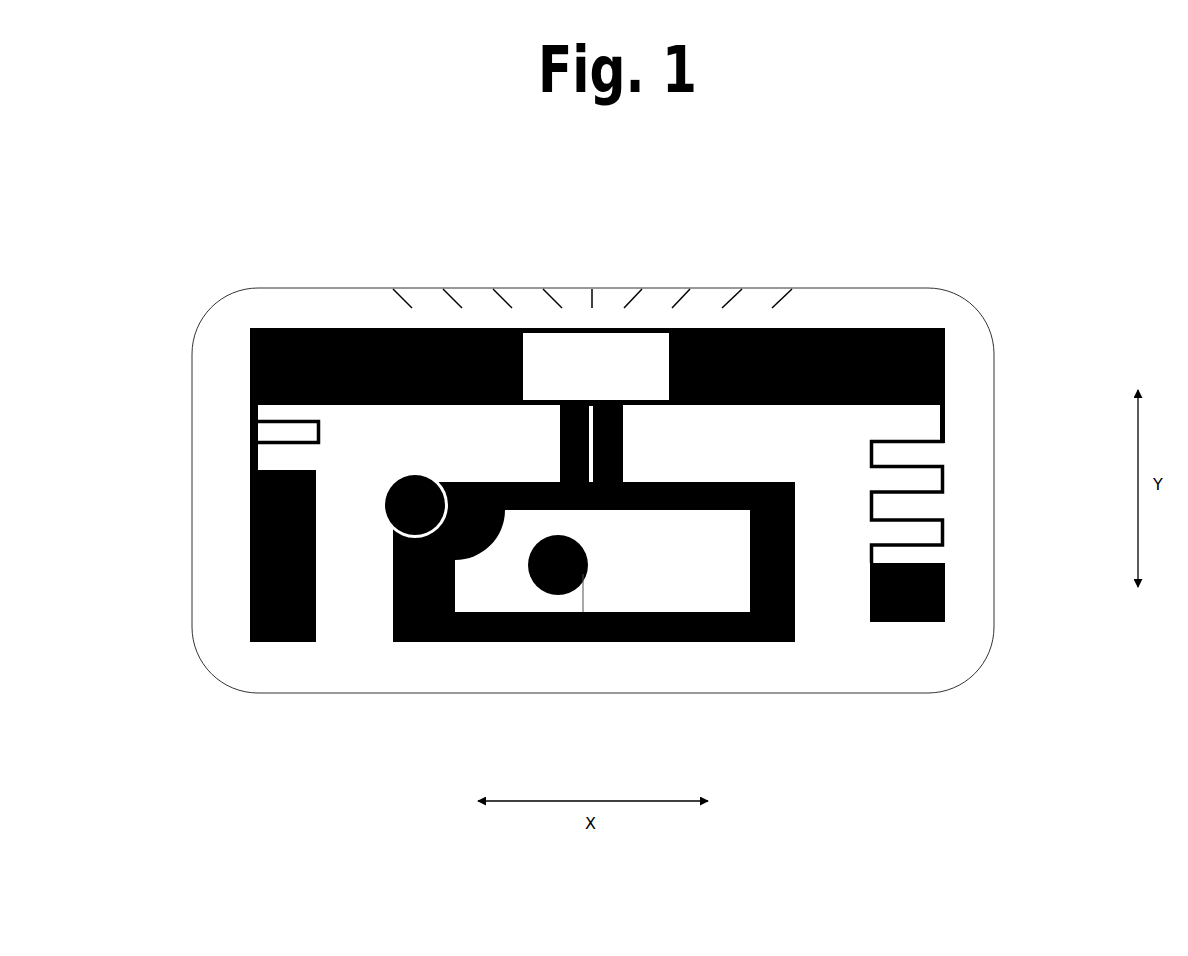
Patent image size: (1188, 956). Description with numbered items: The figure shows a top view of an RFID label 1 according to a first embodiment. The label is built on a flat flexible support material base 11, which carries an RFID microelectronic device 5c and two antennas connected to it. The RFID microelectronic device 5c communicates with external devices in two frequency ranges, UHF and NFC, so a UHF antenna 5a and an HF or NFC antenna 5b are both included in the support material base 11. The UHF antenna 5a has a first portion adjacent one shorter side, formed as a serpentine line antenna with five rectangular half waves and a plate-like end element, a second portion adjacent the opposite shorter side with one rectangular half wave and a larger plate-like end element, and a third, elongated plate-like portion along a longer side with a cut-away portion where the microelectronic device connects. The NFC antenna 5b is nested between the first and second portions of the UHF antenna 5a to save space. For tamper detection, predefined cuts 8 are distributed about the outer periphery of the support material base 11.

The RFID label 1 is at (160, 387).
The flat flexible support material base 11 is at (178, 460).
The UHF antenna 5a is at (248, 470).
The HF or NFC antenna 5b is at (393, 588).
The RFID microelectronic device 5c is at (591, 400).
The predefined cuts 8 is at (688, 290).